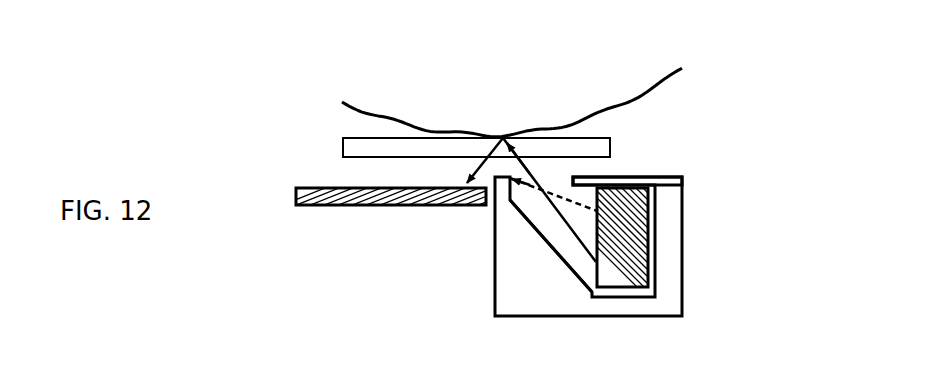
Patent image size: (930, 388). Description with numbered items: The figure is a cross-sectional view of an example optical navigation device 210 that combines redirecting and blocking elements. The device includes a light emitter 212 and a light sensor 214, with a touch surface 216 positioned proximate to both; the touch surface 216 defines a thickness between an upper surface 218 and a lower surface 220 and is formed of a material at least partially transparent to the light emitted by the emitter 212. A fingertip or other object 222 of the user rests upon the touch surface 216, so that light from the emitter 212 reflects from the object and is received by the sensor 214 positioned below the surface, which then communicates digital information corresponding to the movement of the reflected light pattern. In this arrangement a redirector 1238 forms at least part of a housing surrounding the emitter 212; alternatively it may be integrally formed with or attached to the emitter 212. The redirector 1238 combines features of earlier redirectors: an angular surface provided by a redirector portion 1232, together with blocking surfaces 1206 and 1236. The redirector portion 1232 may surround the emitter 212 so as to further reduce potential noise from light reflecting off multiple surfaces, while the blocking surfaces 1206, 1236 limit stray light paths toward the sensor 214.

The optical navigation device 210 is at (304, 254).
The light emitter 212 is at (647, 244).
The light sensor 214 is at (372, 194).
The touch surface 216 is at (338, 146).
The upper surface 218 is at (596, 138).
The lower surface 220 is at (381, 157).
The finger / object 222 is at (528, 99).
The blocking surface 1206 is at (598, 171).
The redirector portion 1232 is at (544, 247).
The blocking surface 1236 is at (495, 192).
The redirector 1238 is at (684, 306).